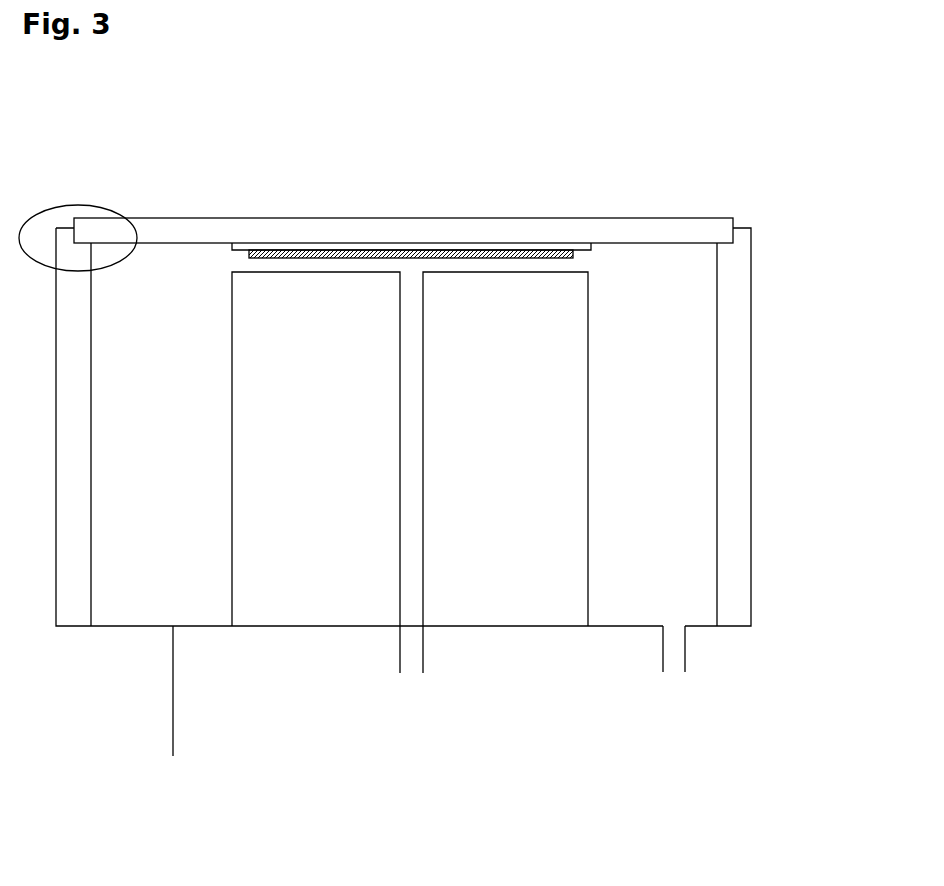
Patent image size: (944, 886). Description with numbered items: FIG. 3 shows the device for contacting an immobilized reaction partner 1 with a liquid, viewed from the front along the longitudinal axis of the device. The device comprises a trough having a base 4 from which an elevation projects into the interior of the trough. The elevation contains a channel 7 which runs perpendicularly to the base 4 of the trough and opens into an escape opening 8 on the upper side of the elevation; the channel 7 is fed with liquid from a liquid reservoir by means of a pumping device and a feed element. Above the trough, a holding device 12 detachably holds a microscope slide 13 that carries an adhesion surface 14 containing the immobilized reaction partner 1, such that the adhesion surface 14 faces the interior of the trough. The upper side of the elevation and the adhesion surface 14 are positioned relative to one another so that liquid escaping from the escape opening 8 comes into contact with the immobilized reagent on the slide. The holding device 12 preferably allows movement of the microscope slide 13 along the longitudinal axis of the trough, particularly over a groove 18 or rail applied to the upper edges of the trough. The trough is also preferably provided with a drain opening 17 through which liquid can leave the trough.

The immobilized reaction partner 1 is at (492, 258).
The base 4 is at (166, 714).
The channel 7 is at (399, 645).
The escape opening 8 is at (407, 275).
The holding device 12 is at (82, 204).
The microscope slide 13 is at (442, 189).
The adhesion surface 14 is at (592, 250).
The drain opening 17 is at (663, 645).
The groove 18 is at (750, 244).